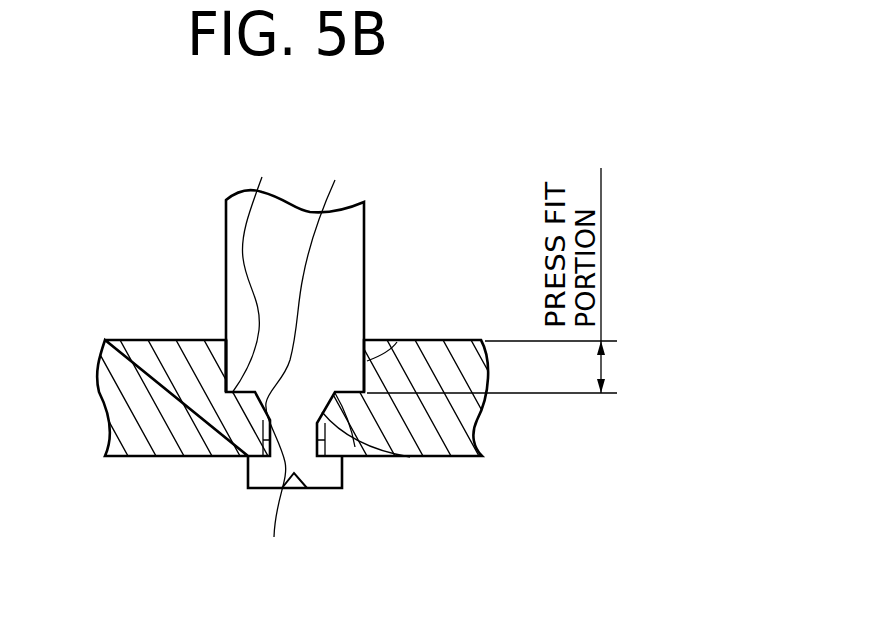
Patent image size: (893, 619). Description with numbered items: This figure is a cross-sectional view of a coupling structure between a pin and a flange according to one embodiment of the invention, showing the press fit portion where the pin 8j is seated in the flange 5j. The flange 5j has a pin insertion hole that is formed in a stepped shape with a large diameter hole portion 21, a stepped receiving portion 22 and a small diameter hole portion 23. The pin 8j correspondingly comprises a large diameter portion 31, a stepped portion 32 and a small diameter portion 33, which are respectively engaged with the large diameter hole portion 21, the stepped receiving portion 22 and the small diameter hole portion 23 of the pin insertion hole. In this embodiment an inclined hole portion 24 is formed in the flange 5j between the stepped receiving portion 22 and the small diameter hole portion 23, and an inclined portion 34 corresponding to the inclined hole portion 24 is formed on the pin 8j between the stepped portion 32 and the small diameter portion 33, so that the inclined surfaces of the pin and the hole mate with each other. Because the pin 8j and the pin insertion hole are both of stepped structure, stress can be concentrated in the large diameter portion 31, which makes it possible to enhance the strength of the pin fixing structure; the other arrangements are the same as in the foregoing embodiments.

The flange 5j is at (178, 473).
The pin 8j is at (397, 288).
The large diameter hole portion 21 is at (227, 362).
The stepped receiving portion 22 is at (255, 268).
The small diameter hole portion 23 is at (285, 523).
The inclined hole portion 24 is at (308, 340).
The large diameter portion 31 is at (397, 342).
The stepped portion 32 is at (410, 457).
The small diameter portion 33 is at (345, 458).
The inclined portion 34 is at (342, 456).